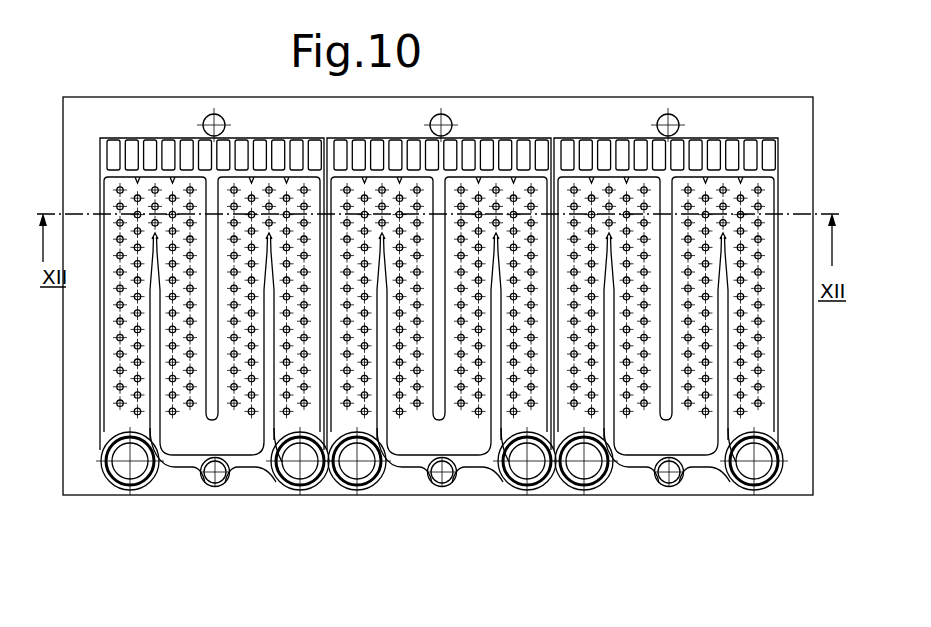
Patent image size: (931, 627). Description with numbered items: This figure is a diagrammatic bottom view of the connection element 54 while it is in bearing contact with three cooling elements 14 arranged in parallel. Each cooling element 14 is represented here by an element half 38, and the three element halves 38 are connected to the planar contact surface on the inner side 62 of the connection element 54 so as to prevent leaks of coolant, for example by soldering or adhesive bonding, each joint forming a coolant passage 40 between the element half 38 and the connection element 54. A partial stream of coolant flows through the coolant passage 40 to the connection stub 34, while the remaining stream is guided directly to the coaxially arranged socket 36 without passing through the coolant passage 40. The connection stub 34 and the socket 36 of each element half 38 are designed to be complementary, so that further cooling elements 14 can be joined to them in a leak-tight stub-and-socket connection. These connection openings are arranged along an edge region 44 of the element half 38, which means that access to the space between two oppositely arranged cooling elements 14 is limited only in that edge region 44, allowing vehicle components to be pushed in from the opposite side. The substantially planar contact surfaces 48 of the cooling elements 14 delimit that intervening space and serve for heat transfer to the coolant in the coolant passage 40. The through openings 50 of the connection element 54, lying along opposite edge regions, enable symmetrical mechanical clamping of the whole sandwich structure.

The cooling element 14 is at (190, 430).
The connection stub 34 is at (288, 484).
The socket 36 is at (107, 477).
The cooling element half 38 is at (176, 430).
The coolant passage 40 is at (116, 331).
The edge region 44 is at (787, 473).
The contact surface 48 is at (117, 181).
The through opening 50 is at (219, 116).
The connection element 54 is at (786, 330).
The inner side 62 is at (750, 120).